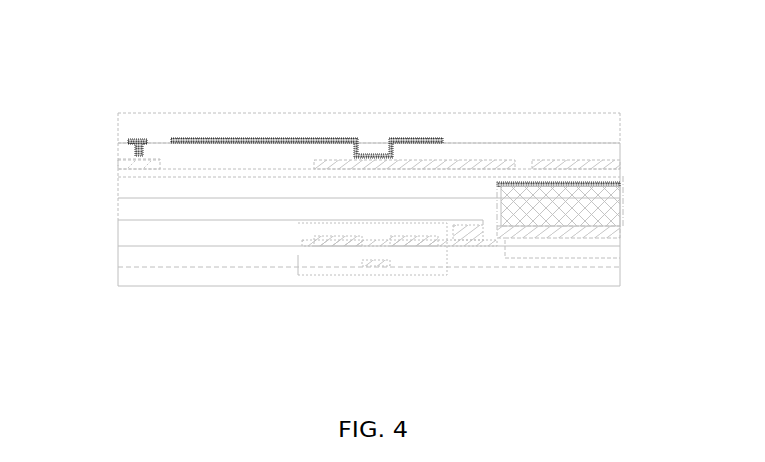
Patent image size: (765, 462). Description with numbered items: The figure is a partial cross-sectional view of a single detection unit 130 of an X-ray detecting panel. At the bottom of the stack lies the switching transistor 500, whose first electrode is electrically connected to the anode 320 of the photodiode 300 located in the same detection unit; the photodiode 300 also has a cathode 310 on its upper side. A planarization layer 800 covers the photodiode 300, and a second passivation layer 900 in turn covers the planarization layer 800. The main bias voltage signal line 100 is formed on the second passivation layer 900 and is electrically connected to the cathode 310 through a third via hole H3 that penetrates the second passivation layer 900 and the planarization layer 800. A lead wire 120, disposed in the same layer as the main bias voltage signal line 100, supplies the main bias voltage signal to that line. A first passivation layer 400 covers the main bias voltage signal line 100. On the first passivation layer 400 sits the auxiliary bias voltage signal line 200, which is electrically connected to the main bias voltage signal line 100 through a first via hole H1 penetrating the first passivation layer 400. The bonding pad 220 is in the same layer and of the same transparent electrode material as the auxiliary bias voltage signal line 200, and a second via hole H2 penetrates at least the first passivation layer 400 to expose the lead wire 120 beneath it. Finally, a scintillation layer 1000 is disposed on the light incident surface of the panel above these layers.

The detection unit 130 is at (371, 170).
The scintillation layer 1000 is at (126, 128).
The first passivation layer 400 is at (615, 148).
The bonding pad 220 is at (139, 138).
The auxiliary bias voltage signal line 200 is at (299, 137).
The main bias voltage signal line 100 is at (468, 164).
The lead wire 120 is at (121, 162).
The second passivation layer 900 is at (112, 174).
The planarization layer 800 is at (123, 198).
The cathode 310 is at (624, 178).
The photodiode 300 is at (625, 208).
The anode 320 is at (616, 233).
The switching transistor 500 is at (298, 262).
The first via hole H1 is at (367, 132).
The second via hole H2 is at (142, 144).
The third via hole H3 is at (523, 157).